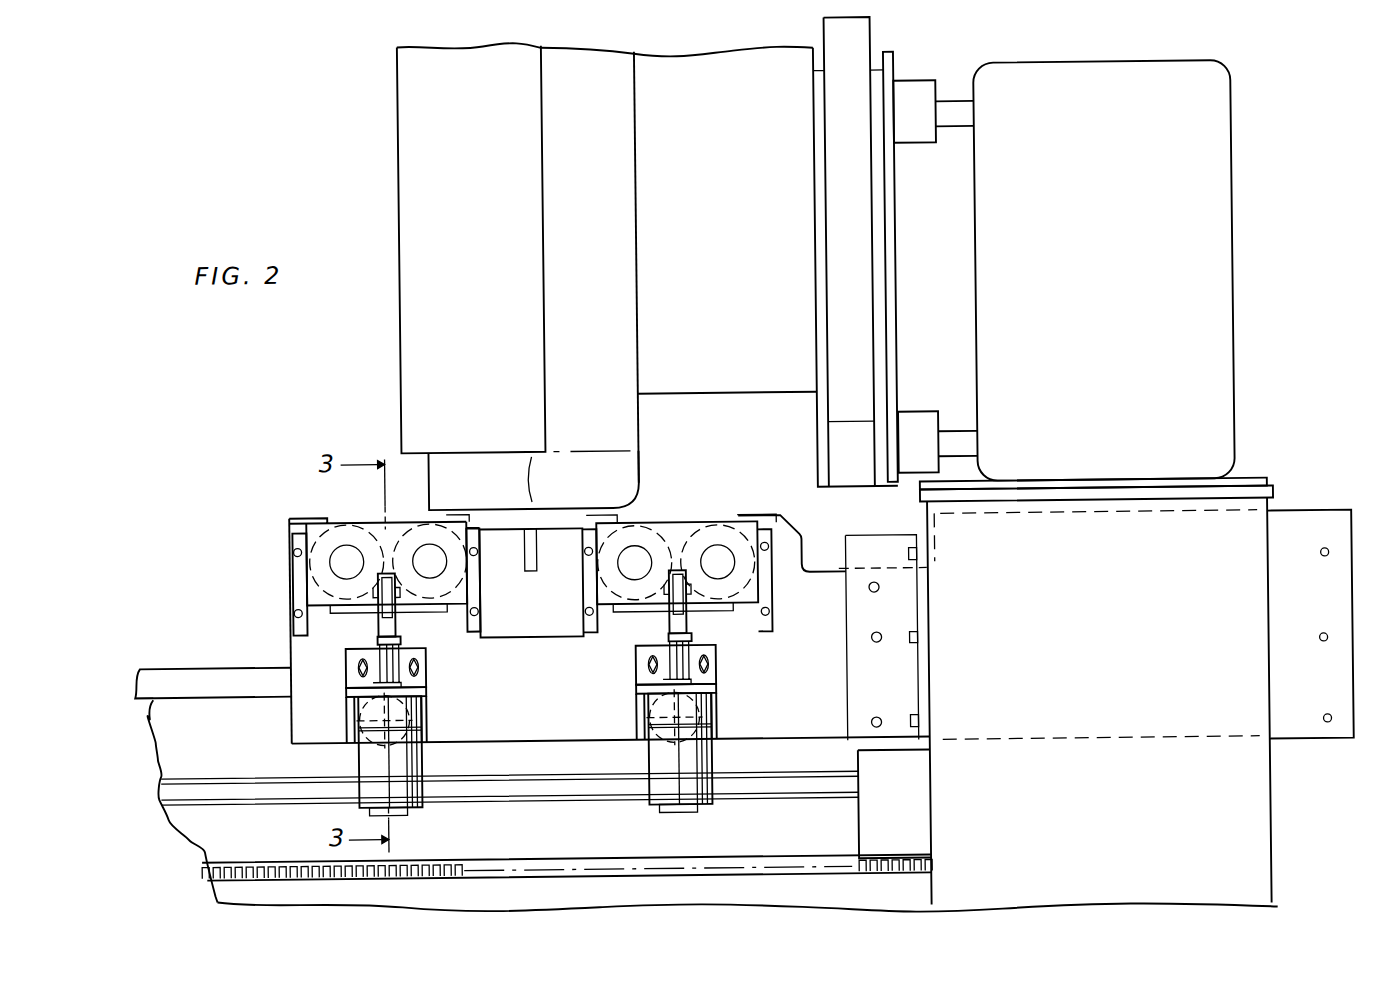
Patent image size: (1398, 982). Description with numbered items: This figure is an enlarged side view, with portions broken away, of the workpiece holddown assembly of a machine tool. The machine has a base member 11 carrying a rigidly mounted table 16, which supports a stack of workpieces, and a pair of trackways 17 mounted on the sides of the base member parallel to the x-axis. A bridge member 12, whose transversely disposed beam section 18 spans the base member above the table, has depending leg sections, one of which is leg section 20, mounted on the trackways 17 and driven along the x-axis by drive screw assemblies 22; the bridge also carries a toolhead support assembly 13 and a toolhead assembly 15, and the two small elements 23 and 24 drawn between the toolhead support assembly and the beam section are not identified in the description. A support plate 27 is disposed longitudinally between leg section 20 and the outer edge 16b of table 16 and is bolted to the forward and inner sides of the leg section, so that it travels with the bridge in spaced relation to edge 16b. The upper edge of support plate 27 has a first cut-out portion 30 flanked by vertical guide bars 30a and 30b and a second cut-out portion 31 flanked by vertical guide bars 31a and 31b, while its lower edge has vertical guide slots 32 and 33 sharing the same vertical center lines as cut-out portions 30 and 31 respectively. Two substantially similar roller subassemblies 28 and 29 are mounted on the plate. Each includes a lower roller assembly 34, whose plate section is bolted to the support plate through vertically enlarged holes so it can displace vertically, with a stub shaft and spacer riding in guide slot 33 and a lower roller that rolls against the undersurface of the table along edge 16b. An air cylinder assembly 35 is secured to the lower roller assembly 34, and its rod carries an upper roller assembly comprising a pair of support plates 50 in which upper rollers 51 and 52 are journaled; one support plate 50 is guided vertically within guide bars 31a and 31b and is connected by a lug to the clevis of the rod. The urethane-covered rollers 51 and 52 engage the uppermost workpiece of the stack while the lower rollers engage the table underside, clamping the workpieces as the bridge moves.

The base member 11 is at (686, 726).
The bridge member 12 is at (1142, 270).
The toolhead support assembly 13 is at (726, 309).
The toolhead assembly 15 is at (497, 306).
The table 16 is at (190, 669).
The outer edge of table 16b is at (172, 638).
The trackways 17 is at (522, 781).
The beam section 18 is at (1237, 316).
The leg section 20 is at (1269, 619).
The drive screw assembly 22 is at (570, 861).
The upper coupling 23 is at (926, 90).
The lower coupling 24 is at (947, 387).
The support plate 27 is at (1353, 704).
The roller subassembly 28 is at (374, 630).
The roller subassembly 29 is at (694, 634).
The first cut-out portion 30 is at (656, 556).
The guide bar 30a is at (531, 581).
The guide bar 30b is at (774, 590).
The second cut-out portion 31 is at (388, 562).
The guide bar 31a is at (292, 584).
The guide bar 31b is at (481, 613).
The guide slot 32 is at (713, 754).
The guide slot 33 is at (354, 754).
The lower roller assembly 34 is at (426, 672).
The air cylinder assembly 35 is at (346, 754).
The support plate 50 is at (374, 520).
The upper roller 51 is at (309, 545).
The upper roller 52 is at (480, 553).